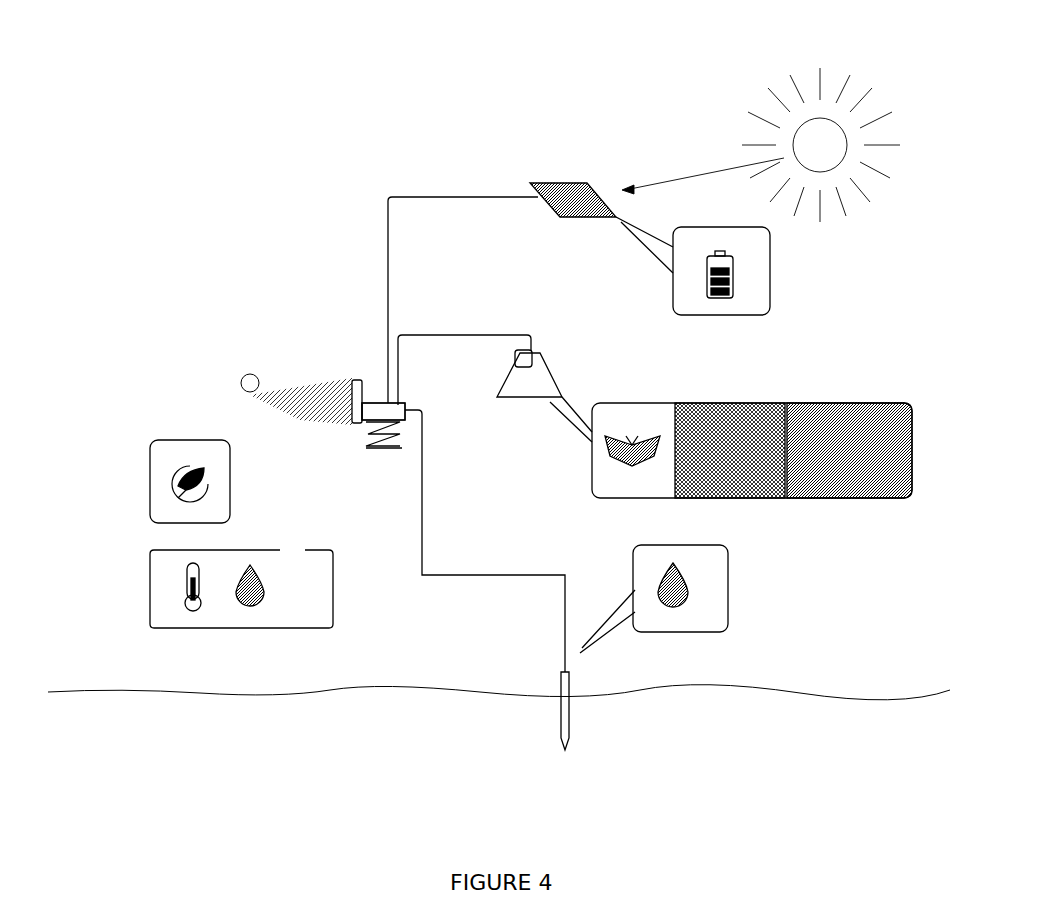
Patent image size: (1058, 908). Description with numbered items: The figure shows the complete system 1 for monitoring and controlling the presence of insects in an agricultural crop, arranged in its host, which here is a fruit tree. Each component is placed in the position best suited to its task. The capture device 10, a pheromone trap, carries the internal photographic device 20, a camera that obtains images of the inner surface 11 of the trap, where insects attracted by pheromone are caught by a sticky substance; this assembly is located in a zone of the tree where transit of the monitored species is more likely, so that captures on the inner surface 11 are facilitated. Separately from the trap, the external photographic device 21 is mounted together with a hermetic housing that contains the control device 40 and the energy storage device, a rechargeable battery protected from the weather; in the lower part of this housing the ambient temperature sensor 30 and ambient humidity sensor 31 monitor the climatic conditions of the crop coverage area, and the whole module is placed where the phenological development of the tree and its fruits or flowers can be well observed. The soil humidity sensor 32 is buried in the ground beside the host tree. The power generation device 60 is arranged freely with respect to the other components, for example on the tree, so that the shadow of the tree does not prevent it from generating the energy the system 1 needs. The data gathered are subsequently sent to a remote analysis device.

The system to monitor and control the presence of insects in agricultural crops 1 is at (340, 94).
The capture device 10 is at (556, 372).
The inner surface 11 is at (840, 422).
The internal photographic device 20 is at (548, 352).
The external photographic device 21 is at (352, 386).
The ambient temperature sensor 30 is at (368, 436).
The ambient humidity sensor 31 is at (280, 550).
The soil humidity sensor 32 is at (568, 682).
The control device 40 is at (407, 405).
The power generation device 60 is at (588, 183).